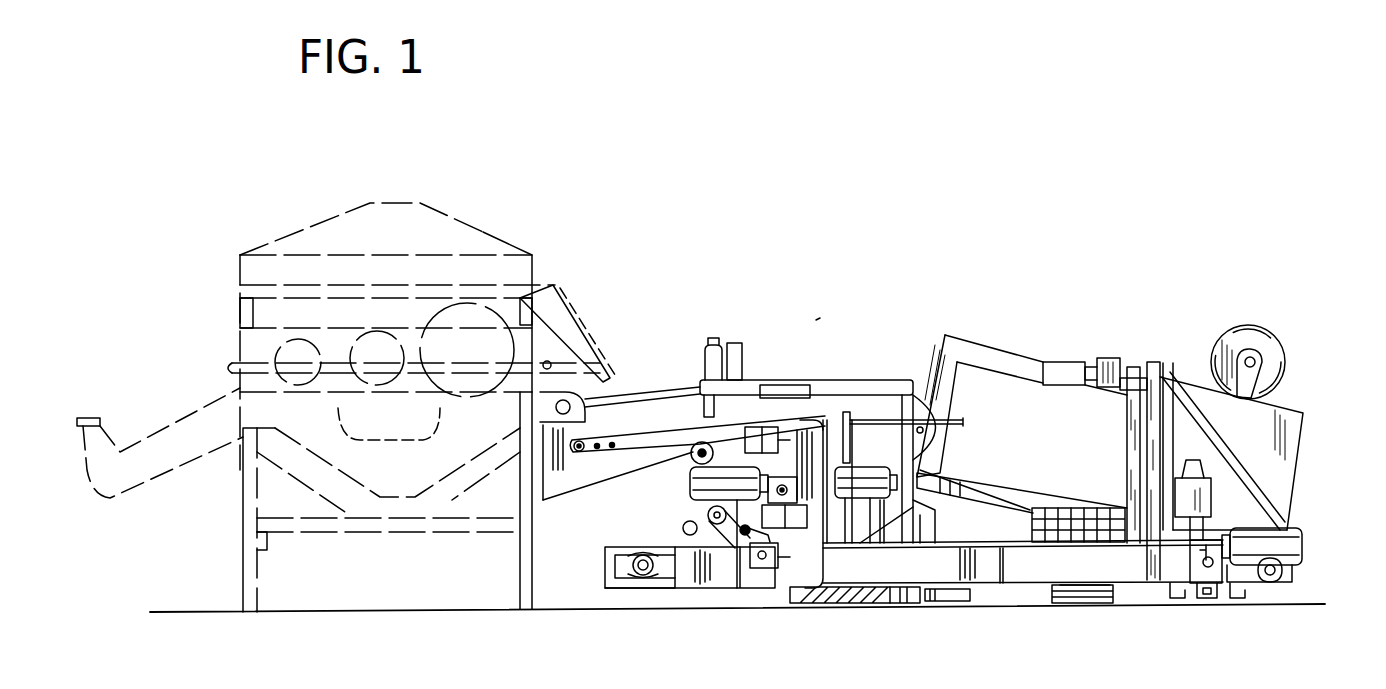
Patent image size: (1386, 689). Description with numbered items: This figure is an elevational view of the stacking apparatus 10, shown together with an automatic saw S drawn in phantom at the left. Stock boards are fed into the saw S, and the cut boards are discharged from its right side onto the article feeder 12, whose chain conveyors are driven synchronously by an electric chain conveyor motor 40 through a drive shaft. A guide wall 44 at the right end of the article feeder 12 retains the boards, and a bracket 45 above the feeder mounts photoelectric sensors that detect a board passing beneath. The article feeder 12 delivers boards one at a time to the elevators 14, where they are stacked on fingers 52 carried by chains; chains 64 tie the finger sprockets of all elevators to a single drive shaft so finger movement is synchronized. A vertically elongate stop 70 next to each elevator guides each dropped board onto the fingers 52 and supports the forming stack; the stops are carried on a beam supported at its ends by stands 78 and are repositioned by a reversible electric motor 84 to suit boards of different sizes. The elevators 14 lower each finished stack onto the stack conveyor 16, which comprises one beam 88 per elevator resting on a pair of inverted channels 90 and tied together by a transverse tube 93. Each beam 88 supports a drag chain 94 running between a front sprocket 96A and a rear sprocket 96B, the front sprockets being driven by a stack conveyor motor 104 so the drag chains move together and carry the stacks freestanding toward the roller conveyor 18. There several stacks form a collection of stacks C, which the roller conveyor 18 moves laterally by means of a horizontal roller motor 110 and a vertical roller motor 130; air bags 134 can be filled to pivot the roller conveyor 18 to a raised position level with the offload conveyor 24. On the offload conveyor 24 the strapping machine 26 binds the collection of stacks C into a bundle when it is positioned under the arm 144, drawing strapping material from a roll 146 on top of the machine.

The automatic saw S is at (495, 226).
The stacking apparatus 10 is at (815, 315).
The article feeder 12 is at (607, 429).
The elevators 14 is at (797, 578).
The stack conveyor 16 is at (1000, 530).
The roller conveyor 18 is at (1123, 432).
The offload conveyor 24 is at (1020, 444).
The strapping machine 26 is at (1337, 378).
The chain conveyor motor 40 is at (690, 480).
The guide wall 44 is at (668, 396).
The bracket 45 is at (830, 378).
The fingers 52 is at (838, 545).
The chains 64 is at (752, 592).
The stop 70 is at (848, 430).
The stands 78 is at (915, 528).
The reversible electric motor 84 is at (886, 545).
The beam 88 is at (682, 592).
The inverted channels 90 is at (733, 562).
The tube 93 is at (1207, 600).
The drag chain 94 is at (1015, 538).
The front sprocket 96A is at (1282, 577).
The rear sprocket 96B is at (632, 553).
The stack conveyor motor 104 is at (1353, 500).
The horizontal roller motor 110 is at (1210, 418).
The vertical roller motor 130 is at (1082, 372).
The air bags 134 is at (1080, 595).
The arm 144 is at (985, 358).
The roll 146 is at (1262, 333).
The collection of stacks C is at (1092, 542).